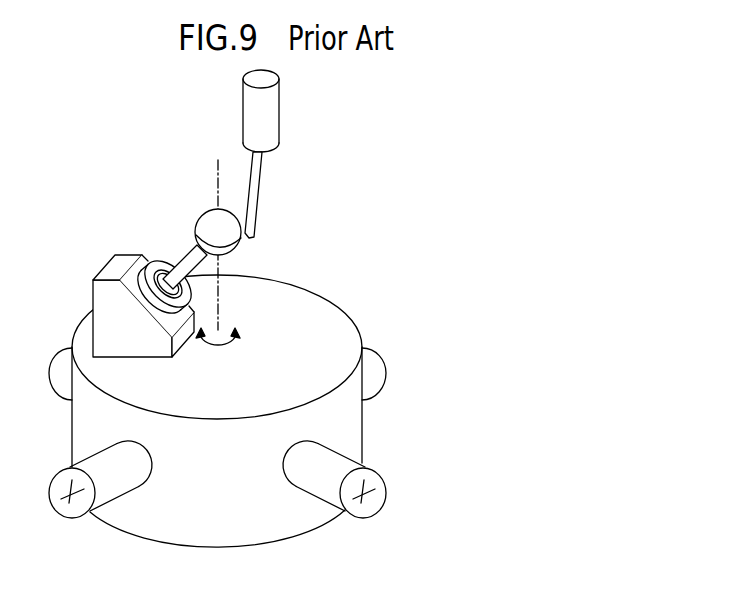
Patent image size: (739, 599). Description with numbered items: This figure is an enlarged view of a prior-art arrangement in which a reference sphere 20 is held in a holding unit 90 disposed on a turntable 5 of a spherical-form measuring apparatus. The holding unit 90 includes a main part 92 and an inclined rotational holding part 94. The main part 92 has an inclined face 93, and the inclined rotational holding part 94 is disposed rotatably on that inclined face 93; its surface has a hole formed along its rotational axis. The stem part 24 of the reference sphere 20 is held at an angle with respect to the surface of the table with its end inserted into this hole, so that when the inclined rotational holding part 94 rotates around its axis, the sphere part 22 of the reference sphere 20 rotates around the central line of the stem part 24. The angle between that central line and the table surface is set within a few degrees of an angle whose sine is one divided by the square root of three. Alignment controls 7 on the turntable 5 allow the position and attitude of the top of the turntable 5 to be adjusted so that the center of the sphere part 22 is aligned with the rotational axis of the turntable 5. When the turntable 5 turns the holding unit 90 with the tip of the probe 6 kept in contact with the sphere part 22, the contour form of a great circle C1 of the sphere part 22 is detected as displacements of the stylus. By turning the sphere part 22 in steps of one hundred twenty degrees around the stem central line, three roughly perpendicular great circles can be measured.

The turntable 5 is at (303, 377).
The alignment controls 7 is at (386, 494).
The probe 6 is at (263, 188).
The reference sphere 20 is at (181, 194).
The sphere part 22 is at (208, 223).
The stem part 24 is at (187, 262).
The holding unit 90 is at (115, 304).
The main part 92 is at (112, 307).
The inclined face 93 is at (161, 304).
The inclined rotational holding part 94 is at (150, 262).
The great circle C1 is at (240, 246).